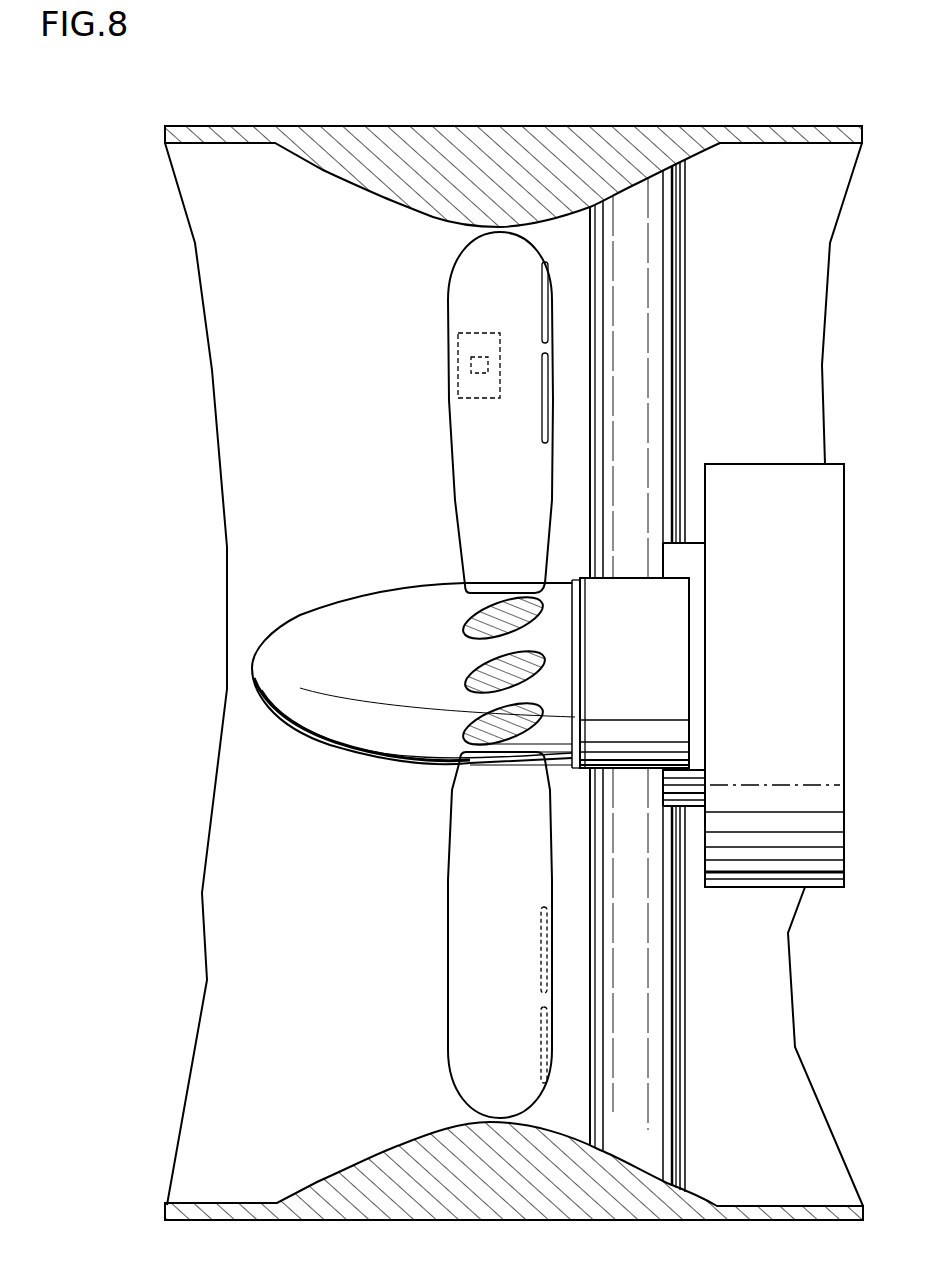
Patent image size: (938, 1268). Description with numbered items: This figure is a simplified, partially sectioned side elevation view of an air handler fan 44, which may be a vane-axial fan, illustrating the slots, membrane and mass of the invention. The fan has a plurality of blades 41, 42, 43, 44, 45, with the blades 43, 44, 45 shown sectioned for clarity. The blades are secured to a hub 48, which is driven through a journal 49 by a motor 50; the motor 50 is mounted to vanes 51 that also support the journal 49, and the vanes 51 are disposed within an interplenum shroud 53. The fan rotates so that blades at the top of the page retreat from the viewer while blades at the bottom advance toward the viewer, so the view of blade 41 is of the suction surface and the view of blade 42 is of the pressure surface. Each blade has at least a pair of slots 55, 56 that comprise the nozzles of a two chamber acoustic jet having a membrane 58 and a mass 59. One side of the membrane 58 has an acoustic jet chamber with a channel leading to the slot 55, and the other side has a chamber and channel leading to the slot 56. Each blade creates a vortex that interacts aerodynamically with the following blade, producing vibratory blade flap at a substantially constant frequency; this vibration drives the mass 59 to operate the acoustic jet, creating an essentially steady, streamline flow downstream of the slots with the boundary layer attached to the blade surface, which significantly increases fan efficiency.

The blade 41 is at (484, 503).
The blade 42 is at (495, 839).
The blade 43 is at (478, 625).
The air handler fan 44 is at (413, 557).
The blade 45 is at (480, 720).
The hub 48 is at (315, 630).
The journal 49 is at (614, 686).
The motor 50 is at (762, 696).
The vanes 51 is at (615, 378).
The interplenum shroud 53 is at (492, 183).
The slot 55 is at (546, 290).
The slot 56 is at (546, 389).
The membrane 58 is at (483, 392).
The mass 59 is at (480, 357).